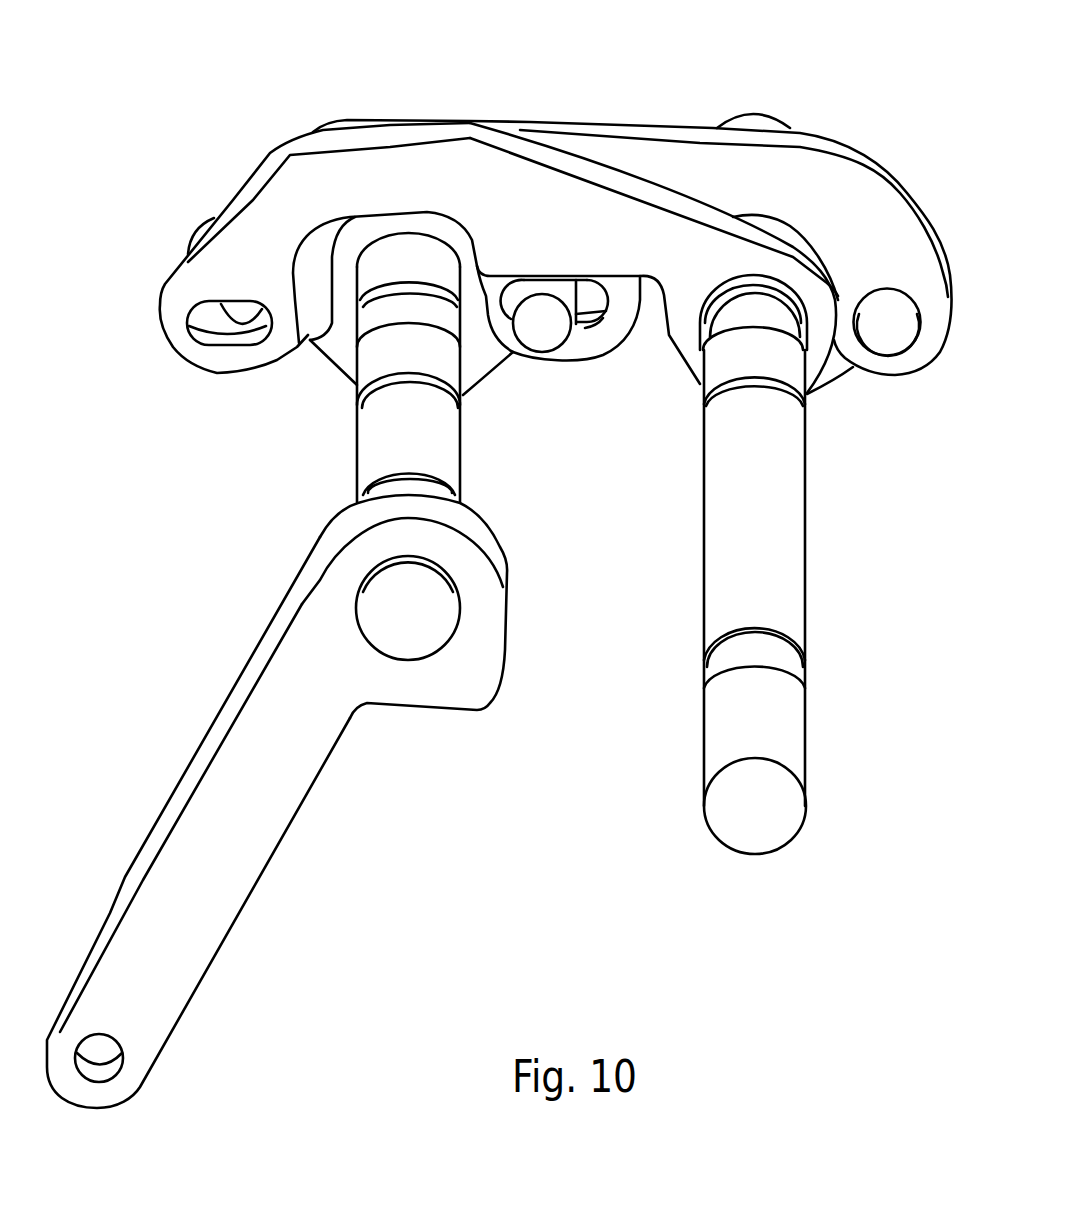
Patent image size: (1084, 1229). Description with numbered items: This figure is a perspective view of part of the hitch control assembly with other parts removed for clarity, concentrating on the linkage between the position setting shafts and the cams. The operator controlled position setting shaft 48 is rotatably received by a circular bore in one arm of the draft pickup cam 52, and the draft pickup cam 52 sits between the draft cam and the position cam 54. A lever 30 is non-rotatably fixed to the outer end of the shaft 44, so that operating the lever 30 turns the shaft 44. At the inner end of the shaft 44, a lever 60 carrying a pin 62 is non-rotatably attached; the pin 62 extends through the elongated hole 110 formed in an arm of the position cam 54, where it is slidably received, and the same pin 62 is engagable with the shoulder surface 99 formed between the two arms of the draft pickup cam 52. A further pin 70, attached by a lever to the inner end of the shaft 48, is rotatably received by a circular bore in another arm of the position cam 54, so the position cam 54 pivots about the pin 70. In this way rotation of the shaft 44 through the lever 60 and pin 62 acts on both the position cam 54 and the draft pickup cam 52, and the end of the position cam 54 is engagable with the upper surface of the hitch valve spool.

The lever 30 is at (278, 810).
The shaft 44 is at (406, 624).
The operator controlled position setting shaft 48 is at (791, 560).
The draft pickup cam 52 is at (642, 178).
The position cam 54 is at (860, 140).
The lever 60 is at (485, 370).
The pin 62 is at (545, 328).
The pin 70 is at (887, 333).
The shoulder surface 99 is at (533, 280).
The elongated hole 110 is at (586, 339).